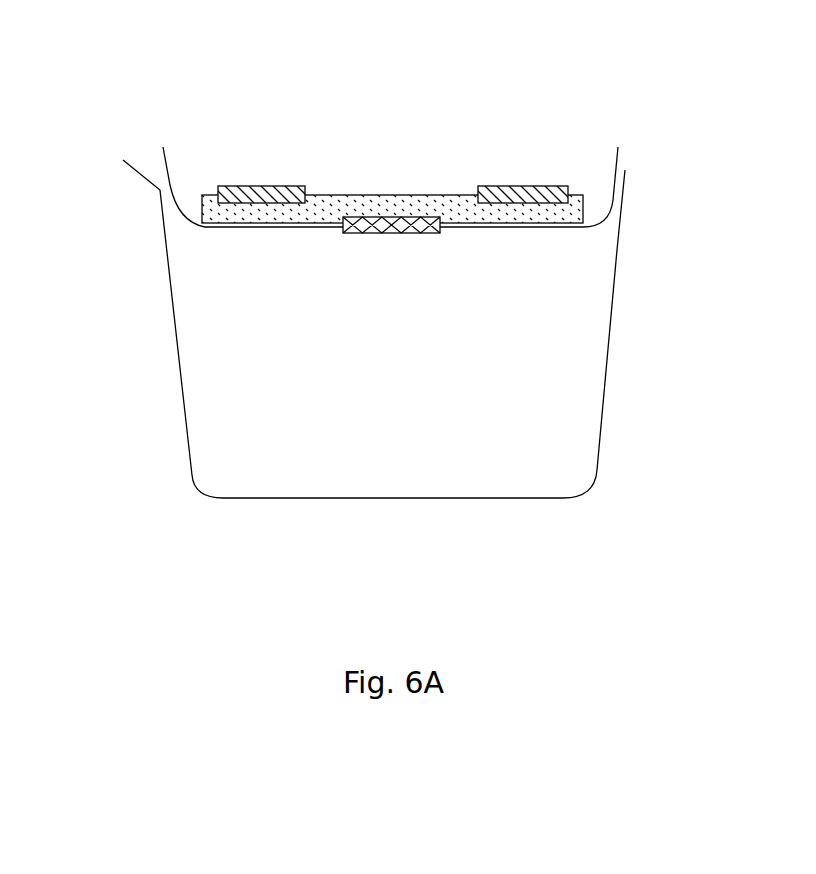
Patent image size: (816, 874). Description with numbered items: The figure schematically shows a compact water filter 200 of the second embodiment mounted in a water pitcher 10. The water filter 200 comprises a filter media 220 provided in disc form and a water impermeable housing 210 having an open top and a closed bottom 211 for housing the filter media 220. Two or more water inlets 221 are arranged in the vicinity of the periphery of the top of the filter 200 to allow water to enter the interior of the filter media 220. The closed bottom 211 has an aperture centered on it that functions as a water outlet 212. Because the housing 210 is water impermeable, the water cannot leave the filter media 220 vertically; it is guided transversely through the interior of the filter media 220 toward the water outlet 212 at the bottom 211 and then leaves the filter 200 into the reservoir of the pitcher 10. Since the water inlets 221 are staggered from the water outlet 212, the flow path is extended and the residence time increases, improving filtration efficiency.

The water pitcher 10 is at (583, 445).
The water filter 200 is at (374, 203).
The housing 210 is at (165, 163).
The closed bottom 211 is at (210, 232).
The water outlet 212 is at (428, 233).
The filter media 220 is at (563, 207).
The water inlets 221 is at (247, 185).